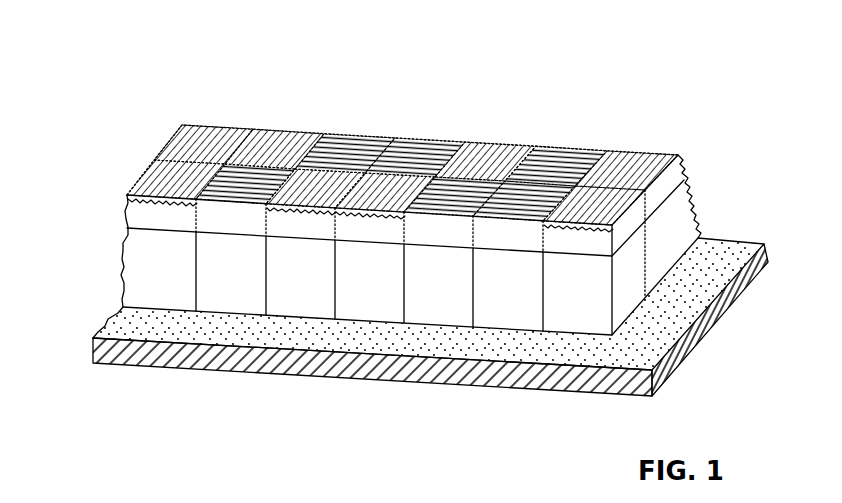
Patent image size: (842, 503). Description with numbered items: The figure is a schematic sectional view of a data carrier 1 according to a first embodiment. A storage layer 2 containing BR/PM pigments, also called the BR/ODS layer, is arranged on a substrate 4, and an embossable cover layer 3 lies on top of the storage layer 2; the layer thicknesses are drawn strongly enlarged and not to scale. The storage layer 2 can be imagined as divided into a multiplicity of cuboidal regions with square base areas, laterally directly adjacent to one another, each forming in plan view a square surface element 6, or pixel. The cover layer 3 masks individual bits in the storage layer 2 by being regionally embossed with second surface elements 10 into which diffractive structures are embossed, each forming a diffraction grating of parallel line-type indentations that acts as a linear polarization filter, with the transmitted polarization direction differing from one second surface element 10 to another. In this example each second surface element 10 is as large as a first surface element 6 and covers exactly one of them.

The data carrier 1 is at (103, 55).
The storage layer 2 is at (677, 220).
The cover layer 3 is at (680, 176).
The substrate 4 is at (660, 370).
The surface element 6 is at (365, 300).
The second surface element 10 is at (572, 155).